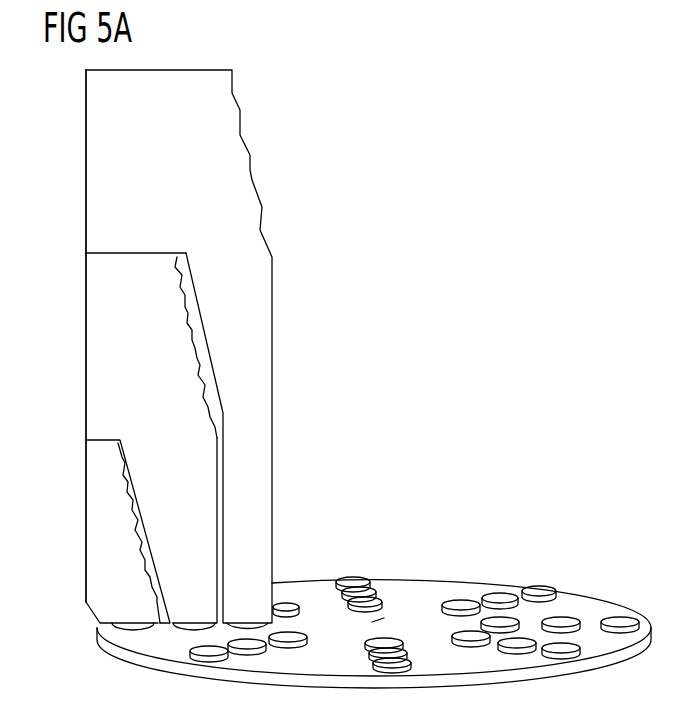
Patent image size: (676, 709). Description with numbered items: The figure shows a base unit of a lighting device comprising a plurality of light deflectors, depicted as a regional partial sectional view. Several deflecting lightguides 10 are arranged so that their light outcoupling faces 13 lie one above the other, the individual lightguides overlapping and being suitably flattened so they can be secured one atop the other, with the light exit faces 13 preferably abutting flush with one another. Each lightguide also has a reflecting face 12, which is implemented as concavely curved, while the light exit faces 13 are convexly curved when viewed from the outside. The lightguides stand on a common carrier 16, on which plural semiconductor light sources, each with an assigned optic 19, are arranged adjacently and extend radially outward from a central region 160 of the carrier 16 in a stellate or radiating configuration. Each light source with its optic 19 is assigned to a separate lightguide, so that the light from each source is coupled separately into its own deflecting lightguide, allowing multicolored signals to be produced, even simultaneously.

The lightguide 10 is at (208, 326).
The reflecting face 12 is at (212, 374).
The light outcoupling face 13 is at (86, 152).
The carrier 16 is at (585, 607).
The optic 19 is at (384, 640).
The central region 160 is at (378, 620).